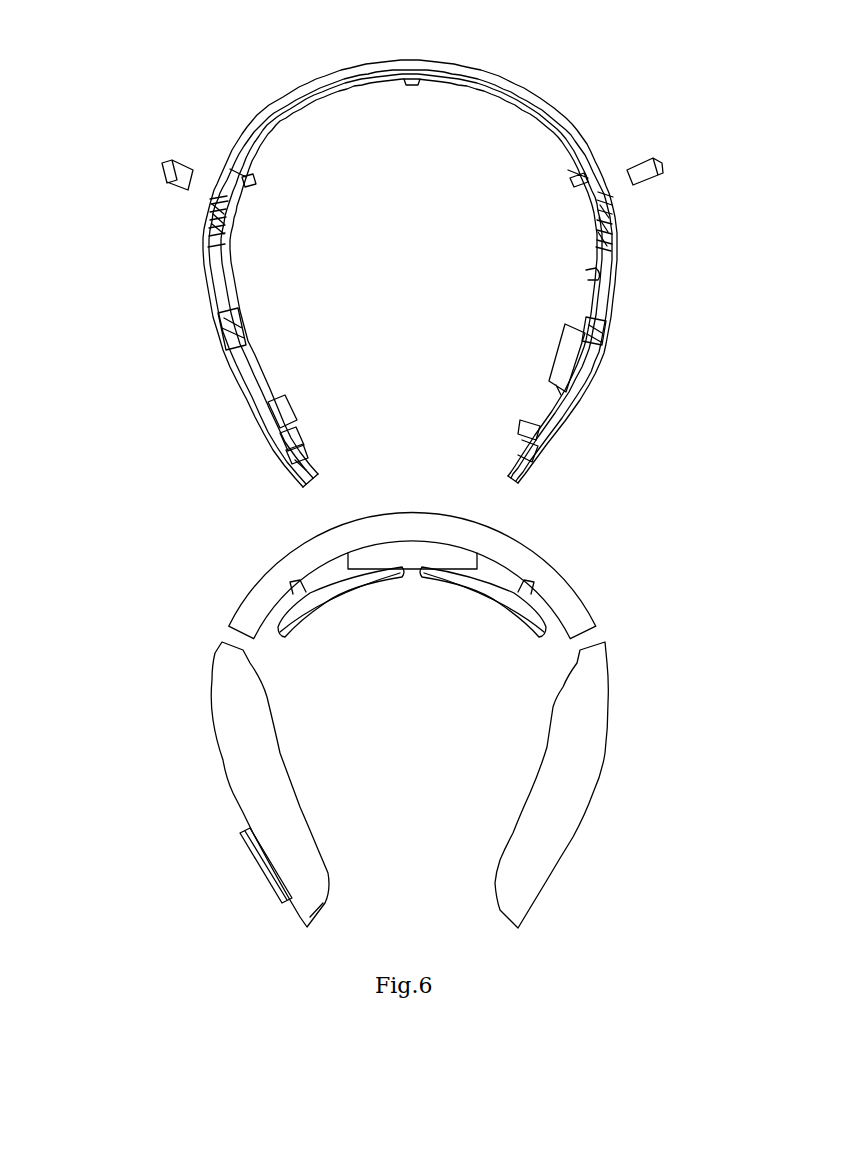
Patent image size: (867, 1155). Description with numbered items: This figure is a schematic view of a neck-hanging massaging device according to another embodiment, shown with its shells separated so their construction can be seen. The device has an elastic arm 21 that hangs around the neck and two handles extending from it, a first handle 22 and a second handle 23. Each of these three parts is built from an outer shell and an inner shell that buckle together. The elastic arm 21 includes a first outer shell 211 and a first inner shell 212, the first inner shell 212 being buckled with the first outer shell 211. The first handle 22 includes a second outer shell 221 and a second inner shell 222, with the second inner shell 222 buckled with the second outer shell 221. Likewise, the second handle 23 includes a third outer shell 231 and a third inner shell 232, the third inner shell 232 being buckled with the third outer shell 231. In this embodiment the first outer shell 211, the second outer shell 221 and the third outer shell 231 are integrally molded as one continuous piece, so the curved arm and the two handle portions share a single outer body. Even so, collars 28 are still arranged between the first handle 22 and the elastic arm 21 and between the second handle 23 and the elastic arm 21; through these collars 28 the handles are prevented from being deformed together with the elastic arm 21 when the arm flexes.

The elastic arm 21 is at (210, 72).
The first outer shell 211 is at (494, 44).
The first inner shell 212 is at (411, 520).
The first handle 22 is at (142, 765).
The second outer shell 221 is at (277, 448).
The second inner shell 222 is at (243, 758).
The second handle 23 is at (692, 478).
The third outer shell 231 is at (600, 350).
The third inner shell 232 is at (597, 703).
The collar 28 is at (174, 186).